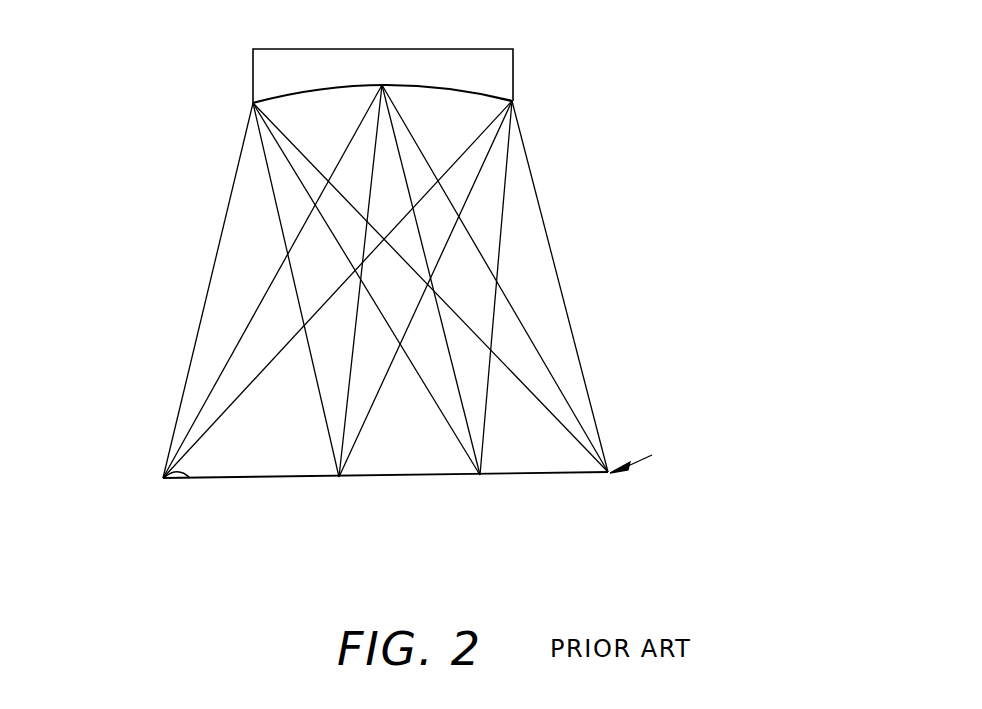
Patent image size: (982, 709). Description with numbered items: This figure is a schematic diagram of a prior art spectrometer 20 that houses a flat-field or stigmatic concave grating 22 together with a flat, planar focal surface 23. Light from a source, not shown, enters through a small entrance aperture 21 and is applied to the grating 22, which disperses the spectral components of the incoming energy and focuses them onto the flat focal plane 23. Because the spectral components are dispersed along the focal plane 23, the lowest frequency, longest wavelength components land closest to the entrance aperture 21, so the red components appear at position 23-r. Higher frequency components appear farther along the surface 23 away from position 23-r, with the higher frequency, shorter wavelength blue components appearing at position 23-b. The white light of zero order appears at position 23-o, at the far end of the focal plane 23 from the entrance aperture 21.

The spectrometer 20 is at (172, 74).
The flat-field or stigmatic concave grating 22 is at (300, 60).
The focal surface 23 is at (267, 478).
The entrance aperture 21 is at (189, 478).
The red position 23-r is at (338, 478).
The blue position 23-b is at (479, 477).
The zero order position 23-o is at (608, 474).